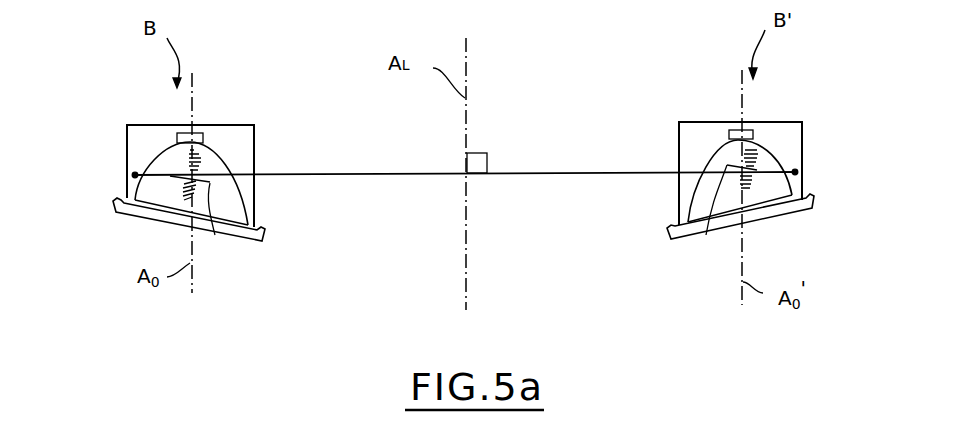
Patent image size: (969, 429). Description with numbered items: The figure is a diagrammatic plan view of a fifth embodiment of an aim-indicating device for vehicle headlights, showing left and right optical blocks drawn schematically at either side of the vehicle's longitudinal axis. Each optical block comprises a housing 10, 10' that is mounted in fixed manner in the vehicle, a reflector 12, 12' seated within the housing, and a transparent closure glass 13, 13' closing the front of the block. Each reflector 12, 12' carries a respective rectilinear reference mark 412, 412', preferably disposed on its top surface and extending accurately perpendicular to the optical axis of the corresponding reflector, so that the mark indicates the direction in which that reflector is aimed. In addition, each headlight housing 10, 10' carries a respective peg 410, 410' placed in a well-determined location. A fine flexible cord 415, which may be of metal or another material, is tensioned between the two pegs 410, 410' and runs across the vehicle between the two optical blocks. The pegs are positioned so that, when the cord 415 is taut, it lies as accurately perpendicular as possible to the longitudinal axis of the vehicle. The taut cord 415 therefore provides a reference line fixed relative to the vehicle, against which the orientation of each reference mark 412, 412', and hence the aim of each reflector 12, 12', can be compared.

The housing 10 is at (181, 142).
The reflector 12 is at (157, 168).
The peg 410 is at (93, 170).
The transparent closure glass 13 is at (171, 224).
The rectilinear reference mark 412 is at (236, 234).
The fine flexible cord 415 is at (543, 174).
The housing 10' is at (733, 139).
The reflector 12' is at (749, 145).
The peg 410' is at (826, 135).
The transparent closure glass 13' is at (755, 228).
The rectilinear reference mark 412' is at (699, 223).